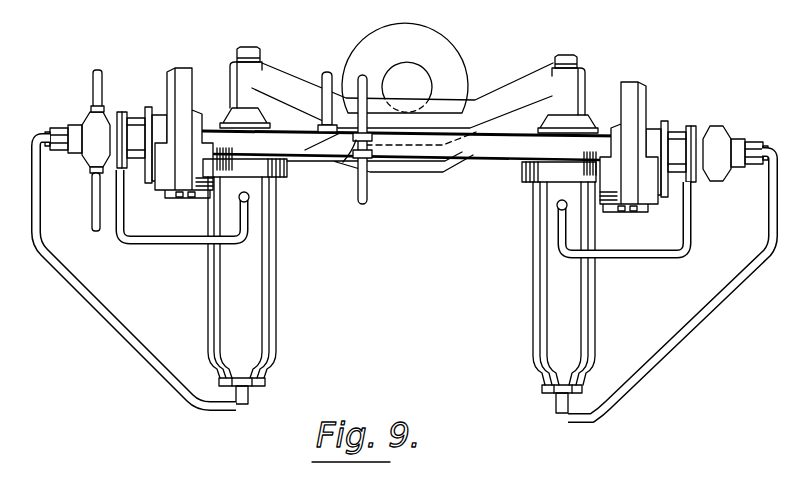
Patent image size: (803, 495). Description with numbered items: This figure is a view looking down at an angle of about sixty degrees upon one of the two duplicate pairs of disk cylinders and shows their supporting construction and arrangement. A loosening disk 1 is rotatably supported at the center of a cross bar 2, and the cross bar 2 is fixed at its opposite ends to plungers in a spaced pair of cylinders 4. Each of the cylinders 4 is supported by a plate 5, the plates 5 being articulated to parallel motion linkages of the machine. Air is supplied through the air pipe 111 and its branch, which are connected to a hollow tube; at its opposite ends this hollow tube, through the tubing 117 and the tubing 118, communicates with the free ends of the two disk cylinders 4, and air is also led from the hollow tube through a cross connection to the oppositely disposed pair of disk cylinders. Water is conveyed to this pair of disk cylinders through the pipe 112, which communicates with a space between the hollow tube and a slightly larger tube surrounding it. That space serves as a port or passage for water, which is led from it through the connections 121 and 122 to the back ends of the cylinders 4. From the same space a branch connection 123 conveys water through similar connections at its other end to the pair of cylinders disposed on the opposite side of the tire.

The loosening disk 1 is at (381, 40).
The cross bar 2 is at (479, 103).
The disk cylinder 4 is at (224, 307).
The supporting plate 5 is at (187, 96).
The air pipe 111 is at (366, 196).
The water pipe 112 is at (92, 212).
The tubing 117 is at (96, 295).
The tubing 118 is at (686, 337).
The water connection 121 is at (166, 243).
The water connection 122 is at (654, 258).
The branch connection 123 is at (102, 81).